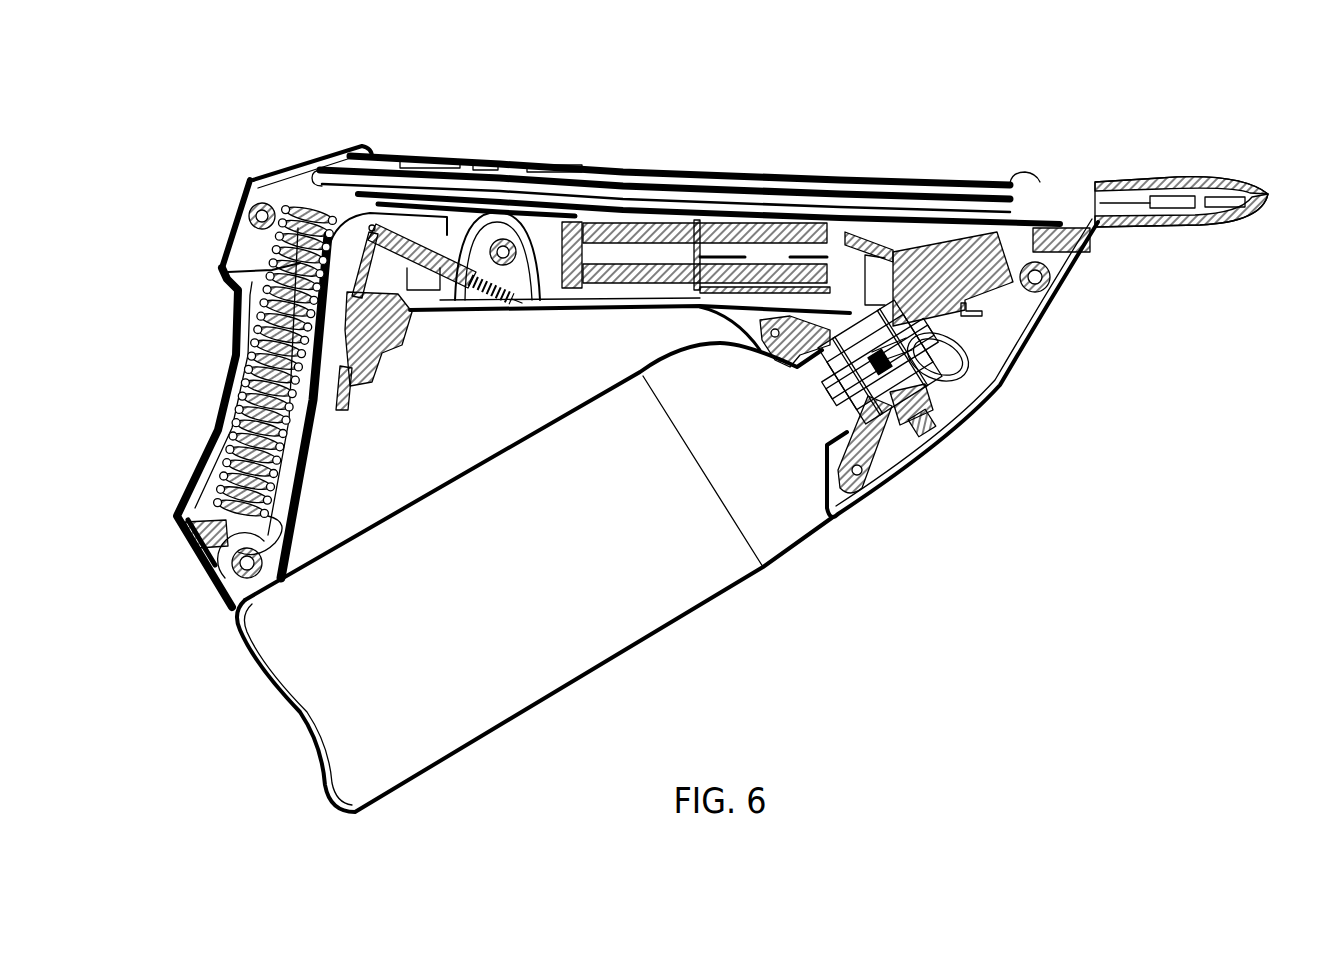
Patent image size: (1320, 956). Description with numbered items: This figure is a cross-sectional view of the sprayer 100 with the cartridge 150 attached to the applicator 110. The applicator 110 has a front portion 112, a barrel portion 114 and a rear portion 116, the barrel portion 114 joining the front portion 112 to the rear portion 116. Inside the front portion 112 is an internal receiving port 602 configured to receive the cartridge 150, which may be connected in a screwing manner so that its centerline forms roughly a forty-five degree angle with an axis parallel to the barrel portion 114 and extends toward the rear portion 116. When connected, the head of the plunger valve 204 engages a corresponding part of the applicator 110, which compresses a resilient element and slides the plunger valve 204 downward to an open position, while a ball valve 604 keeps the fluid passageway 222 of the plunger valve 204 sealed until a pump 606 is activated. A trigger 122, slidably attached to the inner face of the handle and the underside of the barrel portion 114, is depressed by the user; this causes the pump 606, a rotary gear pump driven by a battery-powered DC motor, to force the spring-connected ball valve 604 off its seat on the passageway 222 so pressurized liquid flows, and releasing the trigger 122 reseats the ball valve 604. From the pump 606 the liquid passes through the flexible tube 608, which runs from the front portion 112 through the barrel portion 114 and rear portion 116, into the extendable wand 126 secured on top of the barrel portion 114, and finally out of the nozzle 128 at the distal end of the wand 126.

The sprayer 100 is at (693, 440).
The applicator 110 is at (989, 329).
The front portion 112 is at (1238, 236).
The barrel portion 114 is at (920, 121).
The rear portion 116 is at (150, 240).
The trigger 122 is at (372, 344).
The extendable wand 126 is at (624, 168).
The nozzle 128 is at (1208, 184).
The cartridge 150 is at (506, 589).
The plunger valve 204 is at (858, 407).
The fluid passageway 222 is at (833, 382).
The internal receiving port 602 is at (873, 460).
The ball valve 604 is at (930, 413).
The pump 606 is at (985, 272).
The flexible tube 608 is at (240, 430).